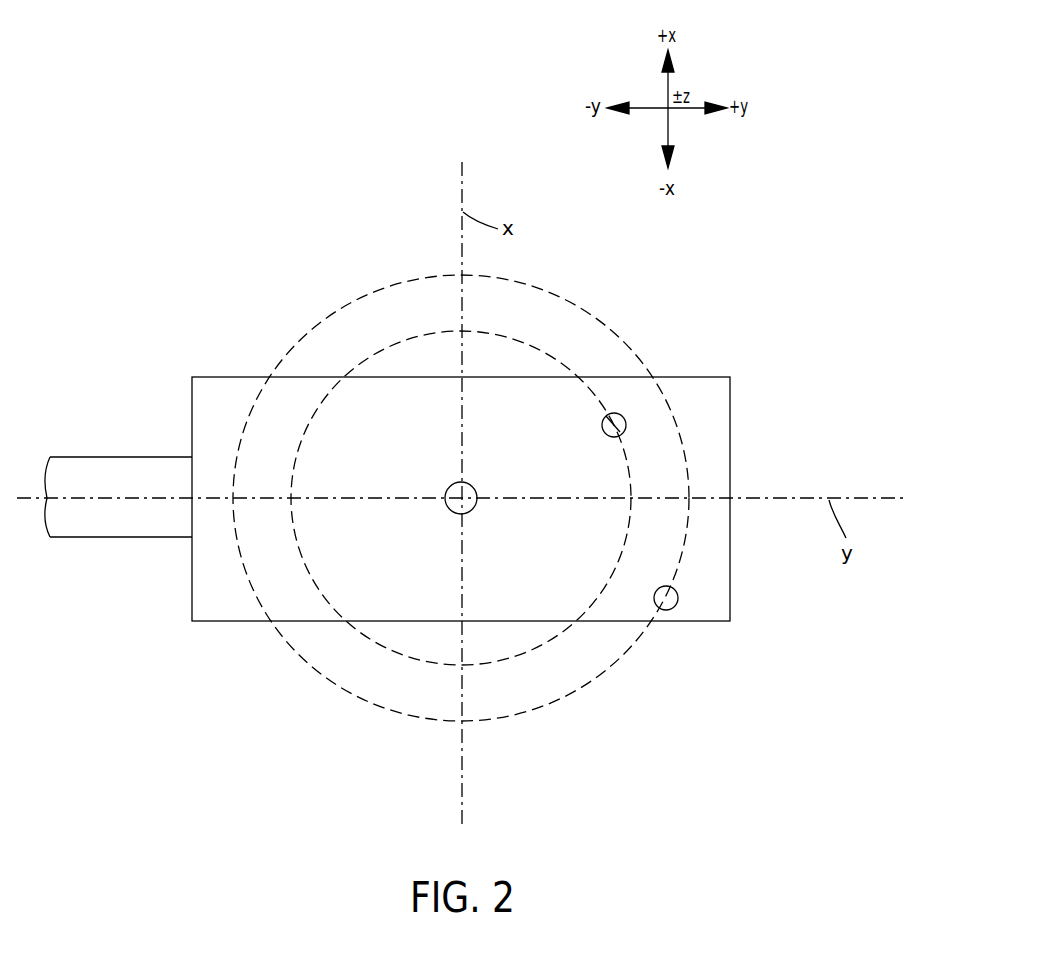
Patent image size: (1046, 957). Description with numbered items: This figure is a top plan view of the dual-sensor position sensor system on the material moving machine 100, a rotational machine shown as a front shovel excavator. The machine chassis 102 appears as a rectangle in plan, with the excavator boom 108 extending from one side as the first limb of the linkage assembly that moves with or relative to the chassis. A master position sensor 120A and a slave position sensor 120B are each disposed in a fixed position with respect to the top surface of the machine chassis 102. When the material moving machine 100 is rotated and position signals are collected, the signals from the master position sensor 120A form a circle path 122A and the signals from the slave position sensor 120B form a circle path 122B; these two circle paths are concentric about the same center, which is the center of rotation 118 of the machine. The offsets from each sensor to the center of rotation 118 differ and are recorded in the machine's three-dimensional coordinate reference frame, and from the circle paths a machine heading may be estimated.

The material moving machine 100 is at (740, 280).
The machine chassis 102 is at (293, 434).
The excavator boom 108 is at (135, 527).
The center of rotation 118 is at (490, 489).
The master position sensor 120A is at (695, 598).
The slave position sensor 120B is at (640, 424).
The circle path 122A is at (606, 668).
The circle path 122B is at (592, 356).